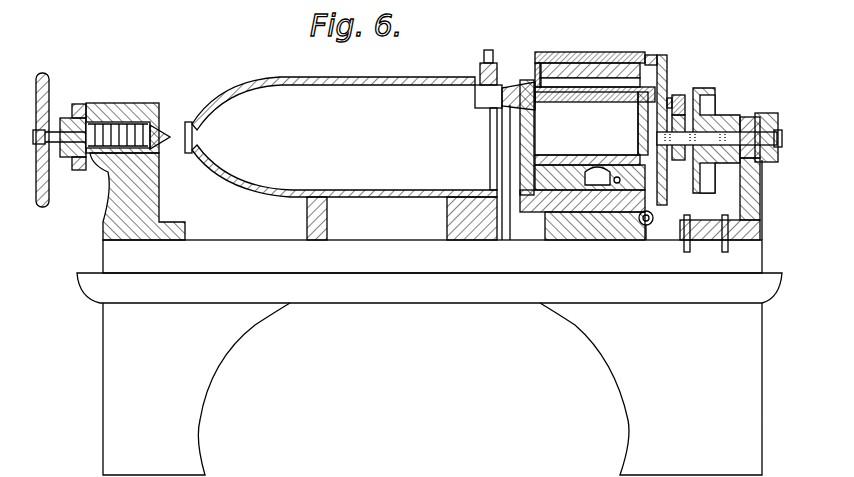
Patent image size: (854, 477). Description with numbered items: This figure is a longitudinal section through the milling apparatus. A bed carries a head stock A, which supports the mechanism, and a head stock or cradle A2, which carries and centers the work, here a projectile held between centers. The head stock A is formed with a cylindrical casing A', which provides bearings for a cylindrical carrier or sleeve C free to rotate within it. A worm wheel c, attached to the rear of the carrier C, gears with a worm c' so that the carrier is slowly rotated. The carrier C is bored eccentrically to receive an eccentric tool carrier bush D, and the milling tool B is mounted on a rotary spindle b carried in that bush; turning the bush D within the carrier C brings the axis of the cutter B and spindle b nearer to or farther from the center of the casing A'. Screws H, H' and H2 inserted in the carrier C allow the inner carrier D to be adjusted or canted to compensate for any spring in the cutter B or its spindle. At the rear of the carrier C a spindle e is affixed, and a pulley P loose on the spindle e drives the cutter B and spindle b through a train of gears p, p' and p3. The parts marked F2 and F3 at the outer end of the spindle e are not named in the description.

The head stock or cradle A2 is at (140, 92).
The milling tool B is at (478, 95).
The cylindrical carrier or sleeve C is at (600, 52).
The eccentric tool carrier bush D is at (591, 123).
The screw H is at (429, 357).
The screw H' is at (586, 41).
The screw H2 is at (630, 55).
The cylindrical casing A' is at (564, 43).
The rotary spindle b is at (590, 97).
The worm wheel c is at (656, 117).
The worm c' is at (652, 236).
The gear p3 is at (668, 70).
The gear p' is at (677, 94).
The gear p is at (676, 153).
The pulley P is at (705, 88).
The spindle e is at (717, 138).
The head stock A is at (743, 115).
The nut F3 is at (775, 106).
The standard F2 is at (760, 170).